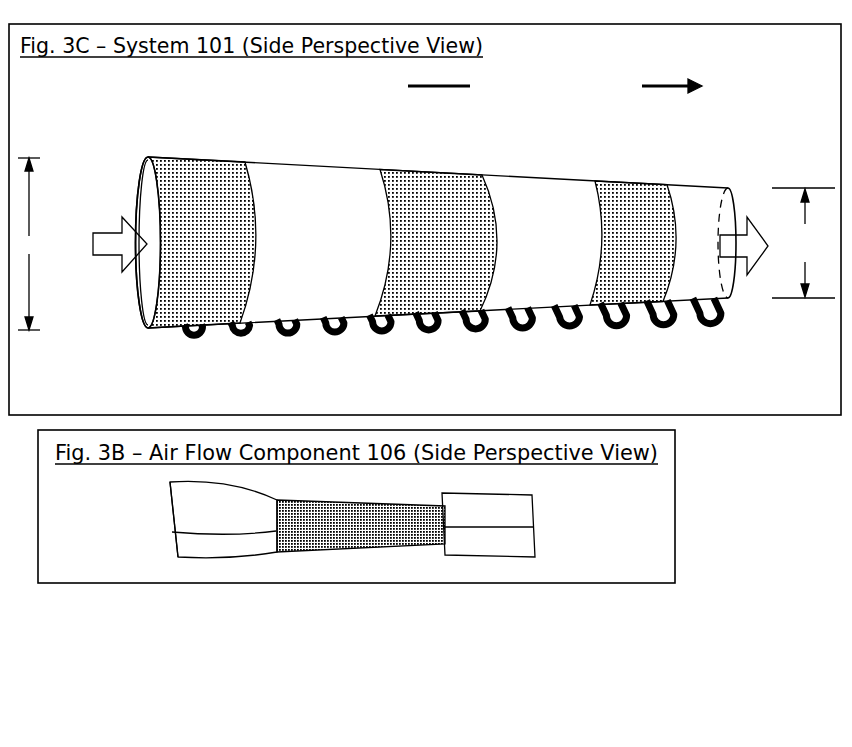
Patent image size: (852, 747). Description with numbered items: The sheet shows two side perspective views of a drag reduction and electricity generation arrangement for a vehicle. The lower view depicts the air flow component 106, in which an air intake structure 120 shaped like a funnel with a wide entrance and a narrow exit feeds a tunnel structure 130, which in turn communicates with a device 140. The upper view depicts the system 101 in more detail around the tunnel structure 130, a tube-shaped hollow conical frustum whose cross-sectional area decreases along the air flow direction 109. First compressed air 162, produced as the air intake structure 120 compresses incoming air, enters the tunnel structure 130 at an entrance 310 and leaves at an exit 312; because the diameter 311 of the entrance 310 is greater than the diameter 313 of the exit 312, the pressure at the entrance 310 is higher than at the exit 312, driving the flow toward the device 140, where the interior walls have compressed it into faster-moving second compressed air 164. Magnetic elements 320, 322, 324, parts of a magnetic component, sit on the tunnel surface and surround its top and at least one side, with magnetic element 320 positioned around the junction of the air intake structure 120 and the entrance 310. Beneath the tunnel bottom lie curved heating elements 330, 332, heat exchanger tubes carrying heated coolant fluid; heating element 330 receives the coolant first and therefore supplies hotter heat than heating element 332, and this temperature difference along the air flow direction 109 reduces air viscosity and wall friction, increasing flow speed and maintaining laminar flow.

In FIG. 3C, the system 101 is at (427, 234).
In FIG. 3B, the air flow component 106 is at (352, 519).
In FIG. 3C, the air flow direction 109 is at (555, 86).
In FIG. 3B, the air intake structure 120 is at (263, 510).
In FIG. 3C, the tunnel structure 130 is at (143, 330).
In FIG. 3B, the tunnel structure 130 is at (430, 531).
In FIG. 3B, the device 140 is at (525, 515).
In FIG. 3C, the first compressed air 162 is at (132, 252).
In FIG. 3C, the second compressed air 164 is at (764, 330).
In FIG. 3C, the entrance 310 is at (140, 175).
In FIG. 3C, the diameter 311 is at (53, 275).
In FIG. 3C, the exit 312 is at (724, 213).
In FIG. 3C, the diameter 313 is at (804, 243).
In FIG. 3C, the magnetic element 320 is at (217, 136).
In FIG. 3C, the magnetic element 322 is at (420, 187).
In FIG. 3C, the magnetic element 324 is at (622, 203).
In FIG. 3C, the heating element 330 is at (488, 347).
In FIG. 3C, the heating element 332 is at (732, 347).